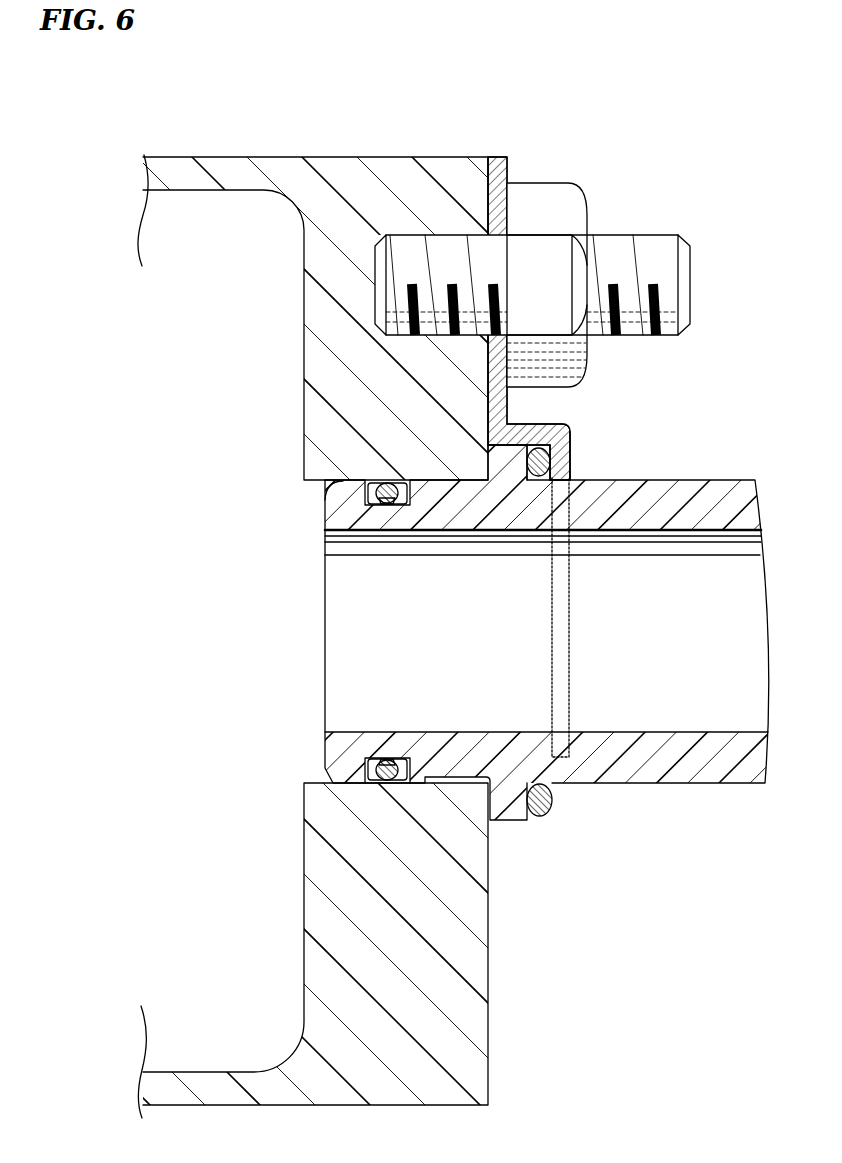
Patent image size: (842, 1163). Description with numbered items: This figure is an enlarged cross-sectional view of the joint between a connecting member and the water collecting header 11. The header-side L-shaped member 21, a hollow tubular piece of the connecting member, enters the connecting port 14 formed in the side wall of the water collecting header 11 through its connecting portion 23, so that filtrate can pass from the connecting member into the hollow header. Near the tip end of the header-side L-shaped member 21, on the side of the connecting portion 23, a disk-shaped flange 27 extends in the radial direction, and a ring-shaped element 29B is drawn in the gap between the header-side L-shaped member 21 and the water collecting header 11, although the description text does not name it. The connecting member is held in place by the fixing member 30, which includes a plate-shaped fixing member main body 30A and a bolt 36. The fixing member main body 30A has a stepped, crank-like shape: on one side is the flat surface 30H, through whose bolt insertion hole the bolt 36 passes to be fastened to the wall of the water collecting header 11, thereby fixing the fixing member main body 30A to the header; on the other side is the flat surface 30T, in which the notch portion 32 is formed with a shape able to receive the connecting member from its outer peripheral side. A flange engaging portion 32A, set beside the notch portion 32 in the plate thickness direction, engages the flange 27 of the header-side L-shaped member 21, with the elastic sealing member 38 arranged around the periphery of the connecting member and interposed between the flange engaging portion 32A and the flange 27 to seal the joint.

The water collecting header 11 is at (227, 155).
The connecting port 14 is at (337, 488).
The header-side L-shaped member 21 is at (684, 792).
The connecting portion 23 is at (455, 532).
The disk-shaped flange 27 is at (512, 822).
The seal ring 29B is at (384, 505).
The fixing member 30 is at (506, 150).
The fixing member main body 30A is at (547, 273).
The flat surface 30H is at (508, 176).
The flat surface 30T is at (572, 640).
The notch portion 32 is at (562, 482).
The flange engaging portion 32A is at (533, 476).
The bolt 36 is at (652, 237).
The sealing member 38 is at (553, 438).